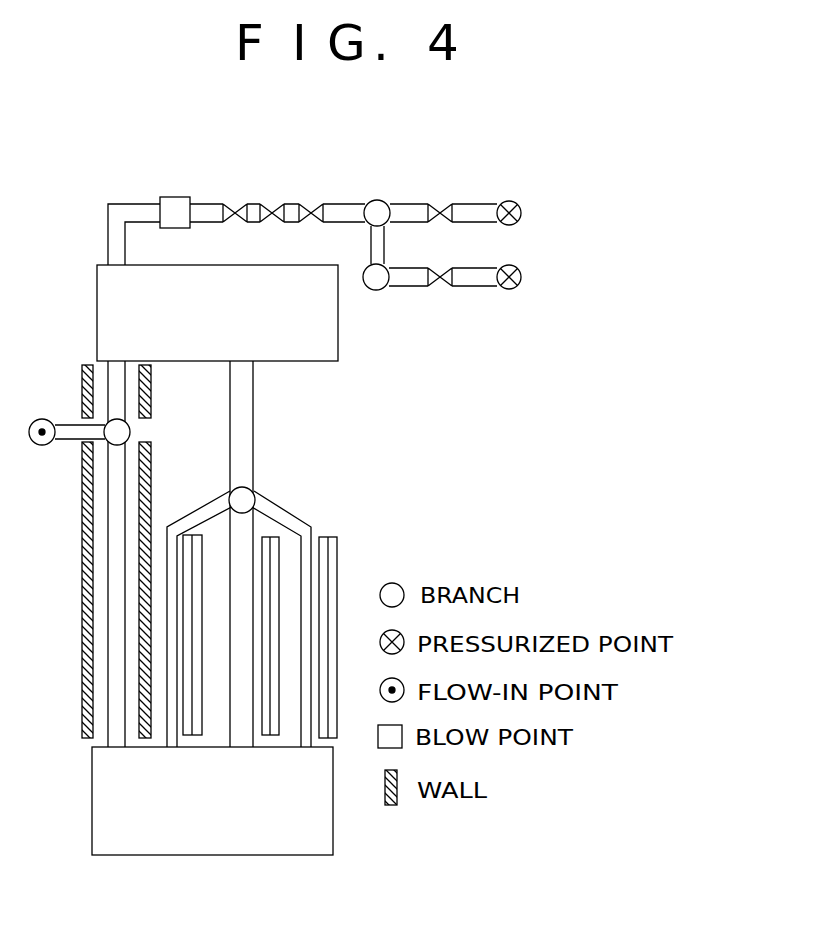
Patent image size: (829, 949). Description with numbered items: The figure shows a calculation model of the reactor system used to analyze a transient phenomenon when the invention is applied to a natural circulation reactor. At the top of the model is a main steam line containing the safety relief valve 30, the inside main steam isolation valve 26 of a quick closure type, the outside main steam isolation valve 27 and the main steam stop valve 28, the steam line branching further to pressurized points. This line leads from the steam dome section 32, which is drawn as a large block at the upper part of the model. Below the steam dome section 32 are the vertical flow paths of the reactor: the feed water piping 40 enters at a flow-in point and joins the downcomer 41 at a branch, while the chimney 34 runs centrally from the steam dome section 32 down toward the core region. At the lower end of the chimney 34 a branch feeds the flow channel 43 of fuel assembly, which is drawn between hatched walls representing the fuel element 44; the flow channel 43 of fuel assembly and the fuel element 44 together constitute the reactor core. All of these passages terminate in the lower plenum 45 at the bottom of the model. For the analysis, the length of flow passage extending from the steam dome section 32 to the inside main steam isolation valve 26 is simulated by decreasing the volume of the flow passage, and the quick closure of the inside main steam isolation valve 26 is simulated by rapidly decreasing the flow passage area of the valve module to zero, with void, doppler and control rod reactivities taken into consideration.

The inside main steam isolation valve 26 is at (233, 207).
The outside main steam isolation valve 27 is at (273, 203).
The main steam stop valve 28 is at (317, 207).
The safety relief valve 30 is at (172, 197).
The steam dome section 32 is at (340, 328).
The chimney 34 is at (253, 412).
The feed water piping 40 is at (75, 425).
The downcomer 41 is at (127, 452).
The flow channel of fuel assembly 43 is at (253, 528).
The fuel element 44 is at (337, 555).
The lower plenum 45 is at (132, 848).